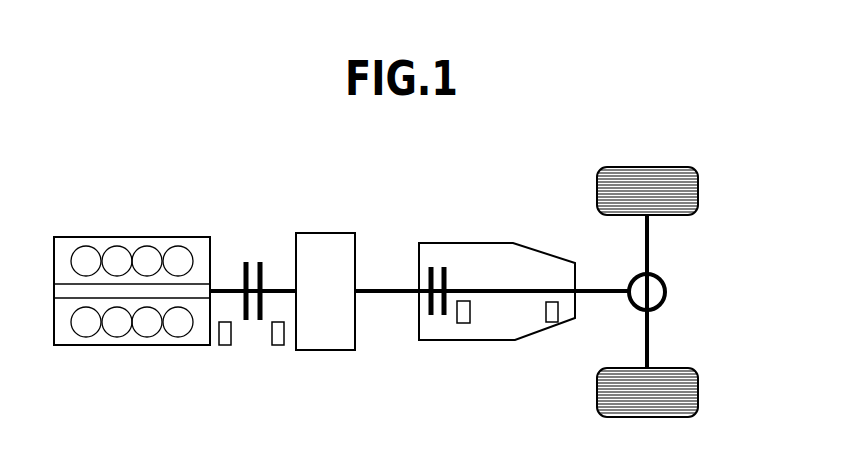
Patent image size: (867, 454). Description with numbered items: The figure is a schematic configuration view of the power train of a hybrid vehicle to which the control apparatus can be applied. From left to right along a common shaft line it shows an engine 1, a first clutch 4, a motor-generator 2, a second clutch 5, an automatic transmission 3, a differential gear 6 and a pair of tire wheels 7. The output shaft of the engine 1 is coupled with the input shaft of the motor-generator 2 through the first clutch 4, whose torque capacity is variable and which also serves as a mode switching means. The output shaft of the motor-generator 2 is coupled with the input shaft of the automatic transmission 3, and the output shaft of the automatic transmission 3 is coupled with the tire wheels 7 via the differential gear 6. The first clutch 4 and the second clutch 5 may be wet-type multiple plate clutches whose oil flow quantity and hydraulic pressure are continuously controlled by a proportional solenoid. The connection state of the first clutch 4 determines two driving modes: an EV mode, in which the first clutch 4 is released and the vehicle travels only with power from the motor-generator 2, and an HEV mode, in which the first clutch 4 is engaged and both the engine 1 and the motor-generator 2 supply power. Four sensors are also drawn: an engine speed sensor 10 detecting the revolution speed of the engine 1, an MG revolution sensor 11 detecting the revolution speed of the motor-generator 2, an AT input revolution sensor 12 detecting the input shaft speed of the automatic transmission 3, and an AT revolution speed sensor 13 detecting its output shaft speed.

The engine 1 is at (85, 234).
The motor-generator 2 is at (325, 231).
The automatic transmission 3 is at (498, 241).
The first clutch 4 is at (253, 259).
The second clutch 5 is at (437, 263).
The differential gear 6 is at (673, 282).
The tire wheels 7 is at (702, 194).
The engine speed sensor 10 is at (223, 350).
The MG revolution sensor 11 is at (278, 350).
The AT input revolution sensor 12 is at (462, 329).
The AT revolution speed sensor 13 is at (553, 327).